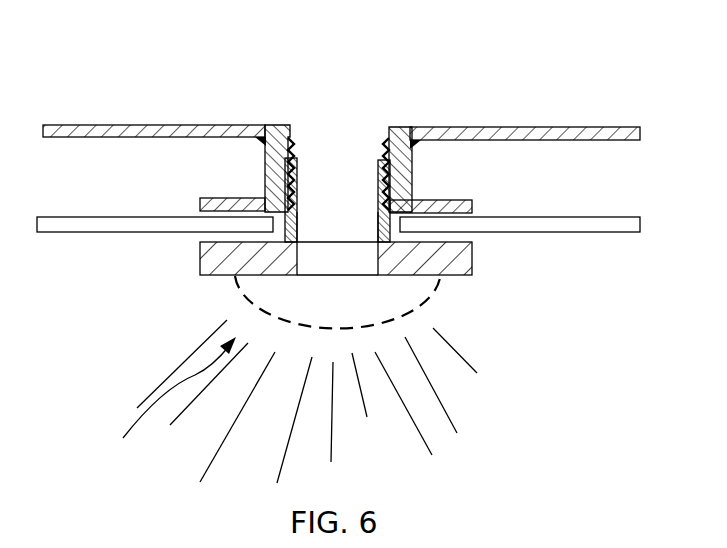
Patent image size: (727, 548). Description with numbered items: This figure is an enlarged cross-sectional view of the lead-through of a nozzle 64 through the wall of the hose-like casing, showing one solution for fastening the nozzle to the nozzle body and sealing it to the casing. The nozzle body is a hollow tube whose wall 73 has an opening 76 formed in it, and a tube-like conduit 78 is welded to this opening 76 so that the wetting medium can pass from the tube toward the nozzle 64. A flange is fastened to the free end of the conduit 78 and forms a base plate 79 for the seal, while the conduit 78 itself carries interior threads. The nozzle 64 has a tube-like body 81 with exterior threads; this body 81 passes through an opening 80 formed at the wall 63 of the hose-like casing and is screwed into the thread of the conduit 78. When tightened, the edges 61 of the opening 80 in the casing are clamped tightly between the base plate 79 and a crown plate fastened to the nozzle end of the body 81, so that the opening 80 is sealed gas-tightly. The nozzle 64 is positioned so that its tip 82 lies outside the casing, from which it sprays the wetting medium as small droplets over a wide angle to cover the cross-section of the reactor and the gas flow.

The edges of the opening 61 is at (230, 234).
The wall of the hose-like casing 63 is at (102, 224).
The nozzle 64 is at (170, 403).
The wall of the nozzle body 73 is at (127, 130).
The opening 76 is at (328, 142).
The conduit 78 is at (407, 127).
The base plate 79 is at (463, 198).
The opening 80 is at (333, 228).
The body of the nozzle 81 is at (380, 185).
The tip of the nozzle 82 is at (373, 293).